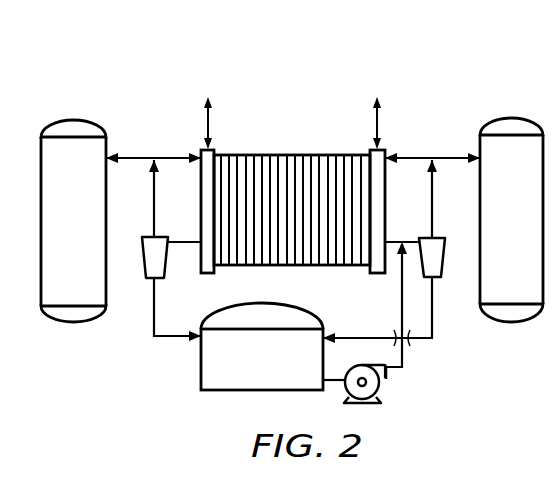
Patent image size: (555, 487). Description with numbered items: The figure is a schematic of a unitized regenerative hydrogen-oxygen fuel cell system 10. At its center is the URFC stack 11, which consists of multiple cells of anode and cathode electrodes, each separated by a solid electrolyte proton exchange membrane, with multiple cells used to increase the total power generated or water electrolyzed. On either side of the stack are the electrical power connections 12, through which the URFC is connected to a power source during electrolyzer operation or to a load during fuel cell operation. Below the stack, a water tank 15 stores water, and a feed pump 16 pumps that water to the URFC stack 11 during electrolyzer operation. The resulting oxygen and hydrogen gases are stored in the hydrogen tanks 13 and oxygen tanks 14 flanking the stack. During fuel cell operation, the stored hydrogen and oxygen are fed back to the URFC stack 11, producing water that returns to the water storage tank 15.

The unitized regenerative hydrogen-oxygen fuel cell system 10 is at (455, 72).
The URFC stack 11 is at (293, 154).
The electrical power connections 12 is at (206, 120).
The hydrogen tanks 13 is at (73, 118).
The oxygen tanks 14 is at (511, 117).
The water tank 15 is at (201, 365).
The feed pump 16 is at (383, 381).